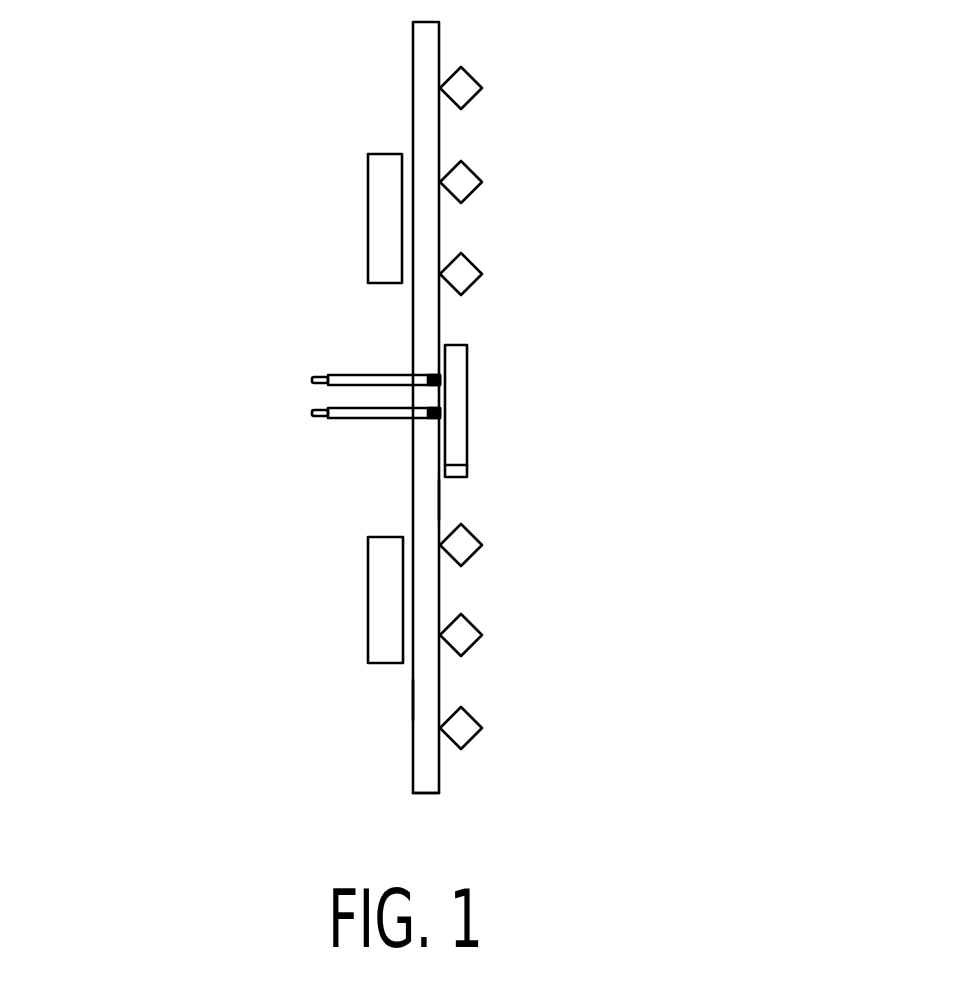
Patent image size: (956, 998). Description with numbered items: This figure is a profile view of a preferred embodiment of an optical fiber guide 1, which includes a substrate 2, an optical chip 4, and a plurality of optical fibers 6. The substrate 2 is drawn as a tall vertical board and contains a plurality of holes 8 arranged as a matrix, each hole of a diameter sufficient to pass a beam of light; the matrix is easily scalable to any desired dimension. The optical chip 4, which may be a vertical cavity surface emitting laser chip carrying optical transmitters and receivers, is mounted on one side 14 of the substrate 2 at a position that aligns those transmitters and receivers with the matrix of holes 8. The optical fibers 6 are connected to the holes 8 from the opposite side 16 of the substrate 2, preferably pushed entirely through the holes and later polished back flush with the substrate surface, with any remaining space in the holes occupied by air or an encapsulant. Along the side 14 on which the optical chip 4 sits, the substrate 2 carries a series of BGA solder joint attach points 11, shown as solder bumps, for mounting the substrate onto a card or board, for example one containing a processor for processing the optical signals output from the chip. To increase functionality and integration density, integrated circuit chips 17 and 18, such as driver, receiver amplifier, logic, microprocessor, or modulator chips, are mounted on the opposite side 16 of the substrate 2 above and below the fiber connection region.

The optical fiber guide 1 is at (513, 407).
The substrate 2 is at (465, 788).
The optical chip 4 is at (529, 408).
The optical fibers 6 is at (328, 406).
The holes 8 is at (481, 373).
The BGA solder joint attach points 11 is at (506, 408).
The side of the substrate 14 is at (507, 501).
The opposite side of the substrate 16 is at (367, 716).
The integrated circuit chip 17 is at (341, 600).
The integrated circuit chip 18 is at (294, 213).